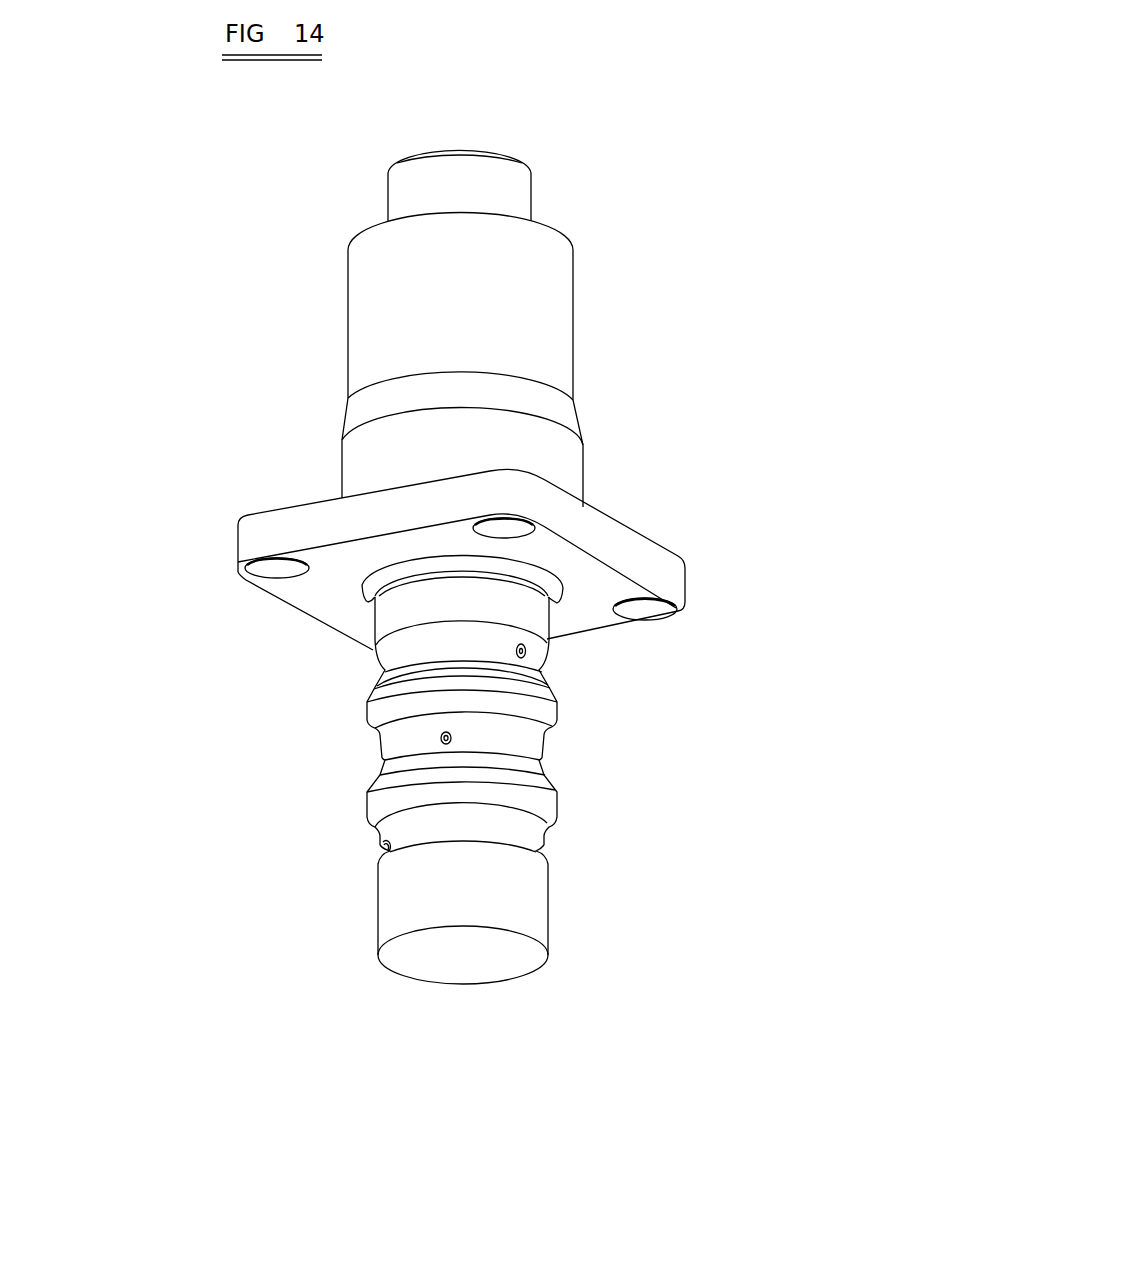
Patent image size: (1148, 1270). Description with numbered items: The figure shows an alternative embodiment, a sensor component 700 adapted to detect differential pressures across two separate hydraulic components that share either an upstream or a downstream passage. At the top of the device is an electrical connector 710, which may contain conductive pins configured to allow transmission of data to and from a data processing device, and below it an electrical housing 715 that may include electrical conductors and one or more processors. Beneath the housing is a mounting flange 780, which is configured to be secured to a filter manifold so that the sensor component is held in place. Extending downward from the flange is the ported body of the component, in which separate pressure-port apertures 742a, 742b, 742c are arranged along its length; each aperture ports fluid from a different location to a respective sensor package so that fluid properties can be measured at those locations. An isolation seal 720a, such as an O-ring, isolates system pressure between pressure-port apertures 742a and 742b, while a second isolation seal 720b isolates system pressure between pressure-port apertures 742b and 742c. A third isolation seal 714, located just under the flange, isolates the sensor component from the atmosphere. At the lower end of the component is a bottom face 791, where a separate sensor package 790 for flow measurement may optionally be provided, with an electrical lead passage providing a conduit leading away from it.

The sensor component 700 is at (317, 282).
The electrical connector 710 is at (490, 150).
The electrical housing 715 is at (550, 303).
The mounting flange 780 is at (647, 530).
The third isolation seal 714 is at (360, 587).
The pressure-port aperture 742c is at (525, 652).
The pressure-port aperture 742b is at (442, 738).
The pressure-port aperture 742a is at (385, 845).
The isolation seal 720b is at (382, 695).
The isolation seal 720a is at (550, 800).
The sensor package for flow measurement 790 is at (382, 962).
The bottom face 791 is at (488, 968).